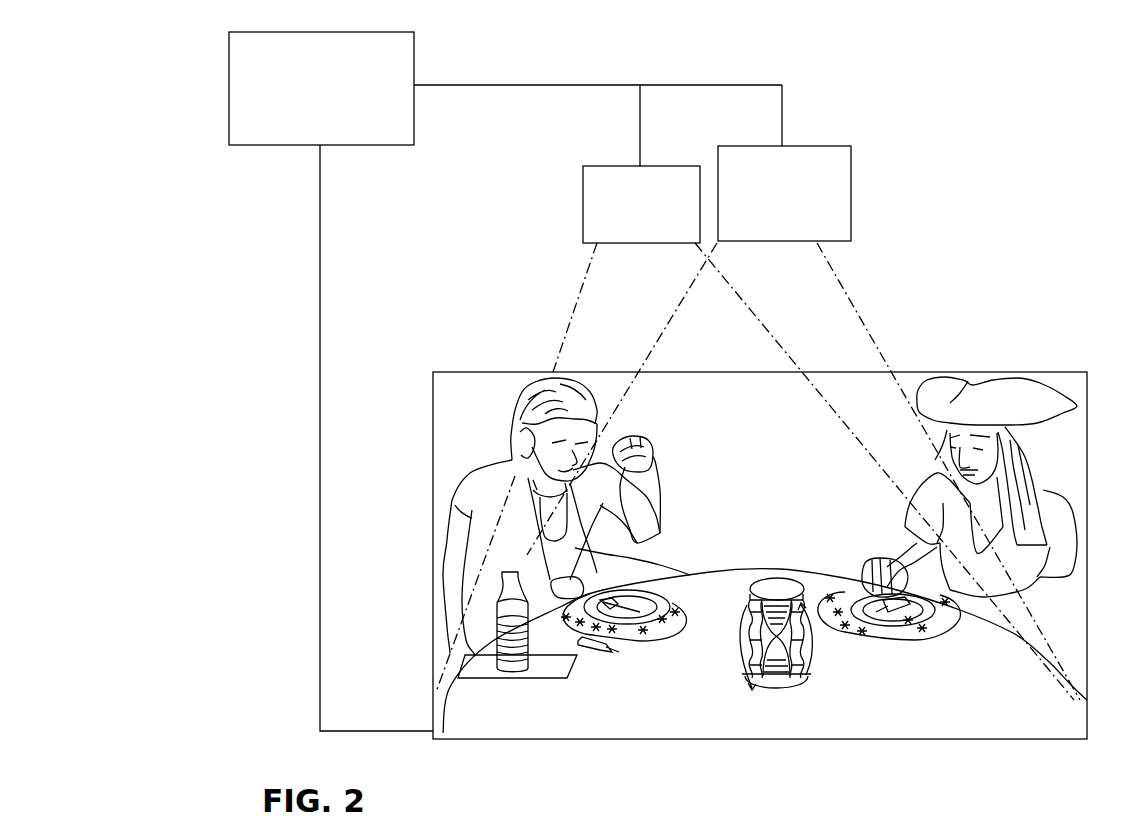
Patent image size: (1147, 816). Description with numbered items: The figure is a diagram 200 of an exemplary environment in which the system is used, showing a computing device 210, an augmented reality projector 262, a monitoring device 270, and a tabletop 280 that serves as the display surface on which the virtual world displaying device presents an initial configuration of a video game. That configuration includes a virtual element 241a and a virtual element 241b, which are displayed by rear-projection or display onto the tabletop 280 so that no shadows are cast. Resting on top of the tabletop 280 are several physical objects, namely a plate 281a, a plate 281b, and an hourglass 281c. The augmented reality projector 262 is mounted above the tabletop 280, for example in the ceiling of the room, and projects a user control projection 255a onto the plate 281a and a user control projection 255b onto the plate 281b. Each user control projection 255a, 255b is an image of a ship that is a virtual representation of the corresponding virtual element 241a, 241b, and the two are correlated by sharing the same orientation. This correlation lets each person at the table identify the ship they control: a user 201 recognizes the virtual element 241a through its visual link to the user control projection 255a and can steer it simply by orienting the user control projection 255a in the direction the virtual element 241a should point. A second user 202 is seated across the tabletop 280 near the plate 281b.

The diagram 200 is at (1014, 93).
The user 201 is at (542, 372).
The second user 202 is at (1012, 395).
The computing device 210 is at (321, 88).
The monitoring device 270 is at (641, 204).
The augmented reality projector 262 is at (784, 193).
The tabletop 280 is at (1023, 675).
The user control projection 255a is at (617, 607).
The user control projection 255b is at (912, 640).
The virtual element 241a is at (590, 653).
The virtual element 241b is at (893, 607).
The plate 281a is at (651, 583).
The plate 281b is at (860, 590).
The hourglass 281c is at (780, 690).